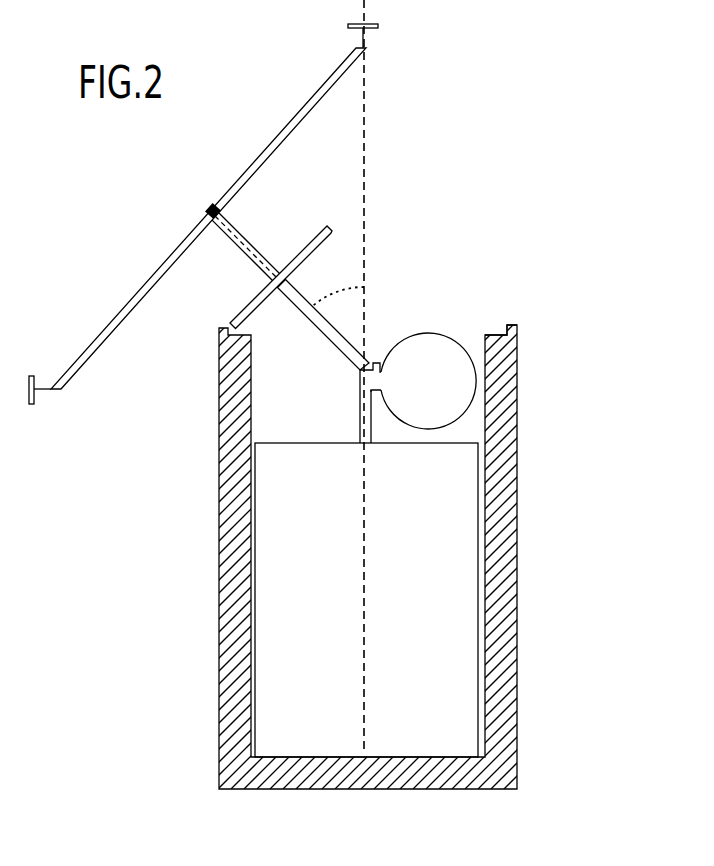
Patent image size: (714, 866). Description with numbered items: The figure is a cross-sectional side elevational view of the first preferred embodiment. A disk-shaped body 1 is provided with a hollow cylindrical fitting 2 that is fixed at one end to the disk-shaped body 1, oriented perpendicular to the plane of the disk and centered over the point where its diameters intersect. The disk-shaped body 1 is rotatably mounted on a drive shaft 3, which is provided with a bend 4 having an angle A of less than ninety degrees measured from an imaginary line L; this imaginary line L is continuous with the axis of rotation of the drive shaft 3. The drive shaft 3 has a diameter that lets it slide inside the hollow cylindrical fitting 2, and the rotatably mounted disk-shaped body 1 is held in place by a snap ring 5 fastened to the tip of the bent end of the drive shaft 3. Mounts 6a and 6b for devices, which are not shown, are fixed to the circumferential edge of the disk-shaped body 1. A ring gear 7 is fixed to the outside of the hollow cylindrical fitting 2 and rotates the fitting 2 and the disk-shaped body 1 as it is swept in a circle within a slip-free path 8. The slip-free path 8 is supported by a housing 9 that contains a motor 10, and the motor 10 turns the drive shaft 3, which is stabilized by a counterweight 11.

The disk-shaped body 1 is at (258, 161).
The hollow cylindrical fitting 2 is at (249, 243).
The drive shaft 3 is at (358, 418).
The bend 4 is at (358, 370).
The snap ring 5 is at (206, 216).
The mount 6a is at (378, 26).
The mount 6b is at (31, 405).
The ring gear 7 is at (329, 228).
The slip-free path 8 is at (508, 335).
The housing 9 is at (518, 413).
The motor 10 is at (477, 507).
The counterweight 11 is at (415, 333).
The imaginary line L is at (365, 122).
The angle A is at (338, 310).